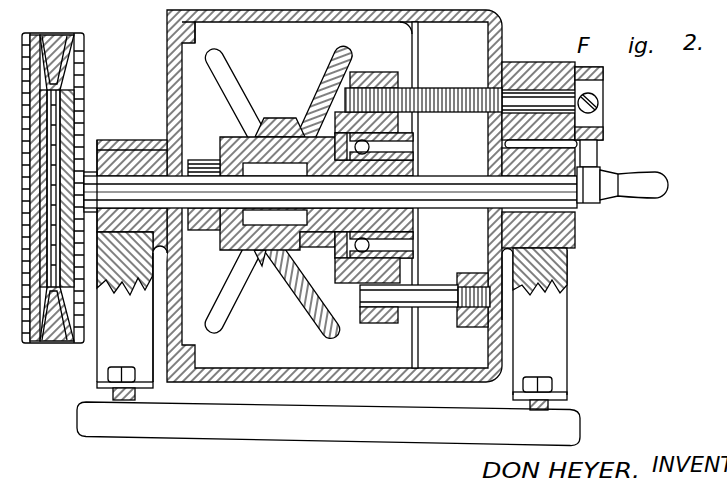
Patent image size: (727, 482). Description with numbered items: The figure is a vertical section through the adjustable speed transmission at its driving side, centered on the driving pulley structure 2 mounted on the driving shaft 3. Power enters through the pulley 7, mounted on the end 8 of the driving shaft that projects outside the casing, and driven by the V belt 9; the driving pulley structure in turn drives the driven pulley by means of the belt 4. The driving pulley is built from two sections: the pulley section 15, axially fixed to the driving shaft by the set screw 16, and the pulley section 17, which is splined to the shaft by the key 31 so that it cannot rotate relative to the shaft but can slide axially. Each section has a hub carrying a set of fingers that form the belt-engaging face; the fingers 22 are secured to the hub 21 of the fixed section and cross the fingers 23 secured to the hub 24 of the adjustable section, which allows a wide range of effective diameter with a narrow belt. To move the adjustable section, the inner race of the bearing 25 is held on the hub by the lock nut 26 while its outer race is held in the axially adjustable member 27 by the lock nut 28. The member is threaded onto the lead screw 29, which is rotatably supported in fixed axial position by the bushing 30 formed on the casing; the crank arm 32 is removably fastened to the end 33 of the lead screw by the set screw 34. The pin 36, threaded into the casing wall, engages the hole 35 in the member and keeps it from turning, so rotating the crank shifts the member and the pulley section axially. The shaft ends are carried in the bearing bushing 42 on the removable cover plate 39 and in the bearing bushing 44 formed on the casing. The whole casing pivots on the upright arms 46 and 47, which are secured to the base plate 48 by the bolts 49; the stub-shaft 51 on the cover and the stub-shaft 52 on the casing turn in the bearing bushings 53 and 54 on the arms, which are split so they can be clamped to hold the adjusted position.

The driving pulley structure 2 is at (282, 347).
The driving shaft 3 is at (210, 212).
The belt 4 is at (281, 117).
The pulley 7 is at (84, 62).
The end of the driving shaft 8 is at (96, 140).
The V belt 9 is at (73, 171).
The pulley section 15 is at (333, 62).
The set screw 16 is at (193, 158).
The pulley section 17 is at (222, 50).
The hub 21 is at (237, 258).
The fingers 22 is at (318, 303).
The fingers 23 is at (243, 283).
The hub 24 is at (320, 252).
The bearing 25 is at (413, 150).
The lock nut 26 is at (413, 237).
The axially adjustable member 27 is at (383, 62).
The lock nut 28 is at (410, 258).
The lead screw 29 is at (437, 88).
The bushing 30 is at (527, 62).
The key 31 is at (447, 176).
The crank arm 32 is at (598, 153).
The end of the lead screw 33 is at (578, 98).
The set screw 34 is at (598, 104).
The hole 35 is at (377, 323).
The pin 36 is at (445, 309).
The cover plate 39 is at (167, 18).
The bearing bushing 42 is at (165, 133).
The bearing bushing 44 is at (493, 247).
The upright arm 46 is at (97, 358).
The upright arm 47 is at (568, 326).
The base plate 48 is at (167, 440).
The bolts 49 is at (120, 367).
The stub-shaft 51 is at (102, 140).
The stub-shaft 52 is at (575, 228).
The bearing bushing 53 is at (115, 140).
The bearing bushing 54 is at (573, 242).